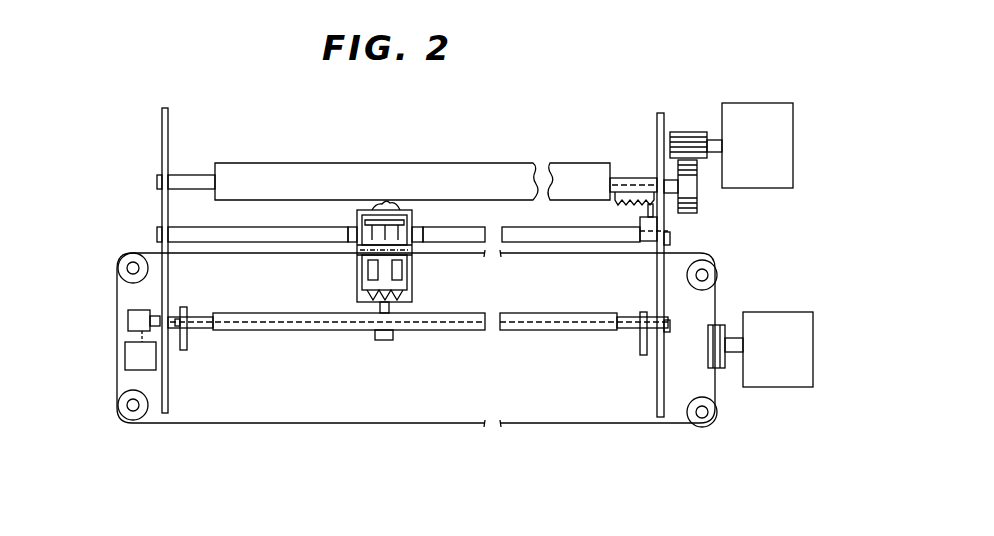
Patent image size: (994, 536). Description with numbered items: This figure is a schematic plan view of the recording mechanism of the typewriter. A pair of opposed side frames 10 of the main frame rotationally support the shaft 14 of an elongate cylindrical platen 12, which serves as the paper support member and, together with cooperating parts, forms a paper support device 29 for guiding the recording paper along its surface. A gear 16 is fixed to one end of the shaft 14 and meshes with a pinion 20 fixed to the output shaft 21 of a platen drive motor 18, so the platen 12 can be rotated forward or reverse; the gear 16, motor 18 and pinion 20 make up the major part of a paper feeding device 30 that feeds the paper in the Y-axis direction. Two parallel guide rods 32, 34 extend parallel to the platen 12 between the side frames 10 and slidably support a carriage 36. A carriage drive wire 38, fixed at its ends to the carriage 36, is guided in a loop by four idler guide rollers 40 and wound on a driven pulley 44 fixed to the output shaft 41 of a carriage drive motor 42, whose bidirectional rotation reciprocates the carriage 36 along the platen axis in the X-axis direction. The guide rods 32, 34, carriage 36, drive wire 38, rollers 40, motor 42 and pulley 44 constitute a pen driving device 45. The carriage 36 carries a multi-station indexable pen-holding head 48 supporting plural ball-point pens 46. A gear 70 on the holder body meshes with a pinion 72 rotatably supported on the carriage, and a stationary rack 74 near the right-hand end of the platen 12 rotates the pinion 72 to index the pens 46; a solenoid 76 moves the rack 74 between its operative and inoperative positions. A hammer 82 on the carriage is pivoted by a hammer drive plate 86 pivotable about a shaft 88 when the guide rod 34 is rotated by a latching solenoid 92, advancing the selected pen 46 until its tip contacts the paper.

The side frames 10 is at (162, 124).
The platen 12 is at (295, 172).
The shaft 14 is at (195, 175).
The gear 16 is at (697, 199).
The platen drive motor 18 is at (780, 112).
The pinion 20 is at (692, 130).
The output shaft 21 is at (713, 138).
The paper support device 29 is at (506, 160).
The paper feeding device 30 is at (744, 92).
The guide rod 32 is at (185, 237).
The guide rod 34 is at (172, 316).
The carriage 36 is at (360, 295).
The carriage drive wire 38 is at (265, 254).
The idler guide rollers 40 is at (118, 269).
The output shaft 41 is at (736, 362).
The carriage drive motor 42 is at (804, 316).
The driven pulley 44 is at (708, 353).
The pen driving device 45 is at (766, 400).
The ball-point pens 46 is at (402, 285).
The pen-holding head 48 is at (416, 266).
The gear 70 is at (412, 242).
The pinion 72 is at (390, 203).
The stationary rack 74 is at (622, 188).
The solenoid 76 is at (653, 229).
The hammer 82 is at (386, 314).
The hammer drive plate 86 is at (578, 318).
The shaft 88 is at (205, 331).
The latching solenoid 92 is at (132, 362).